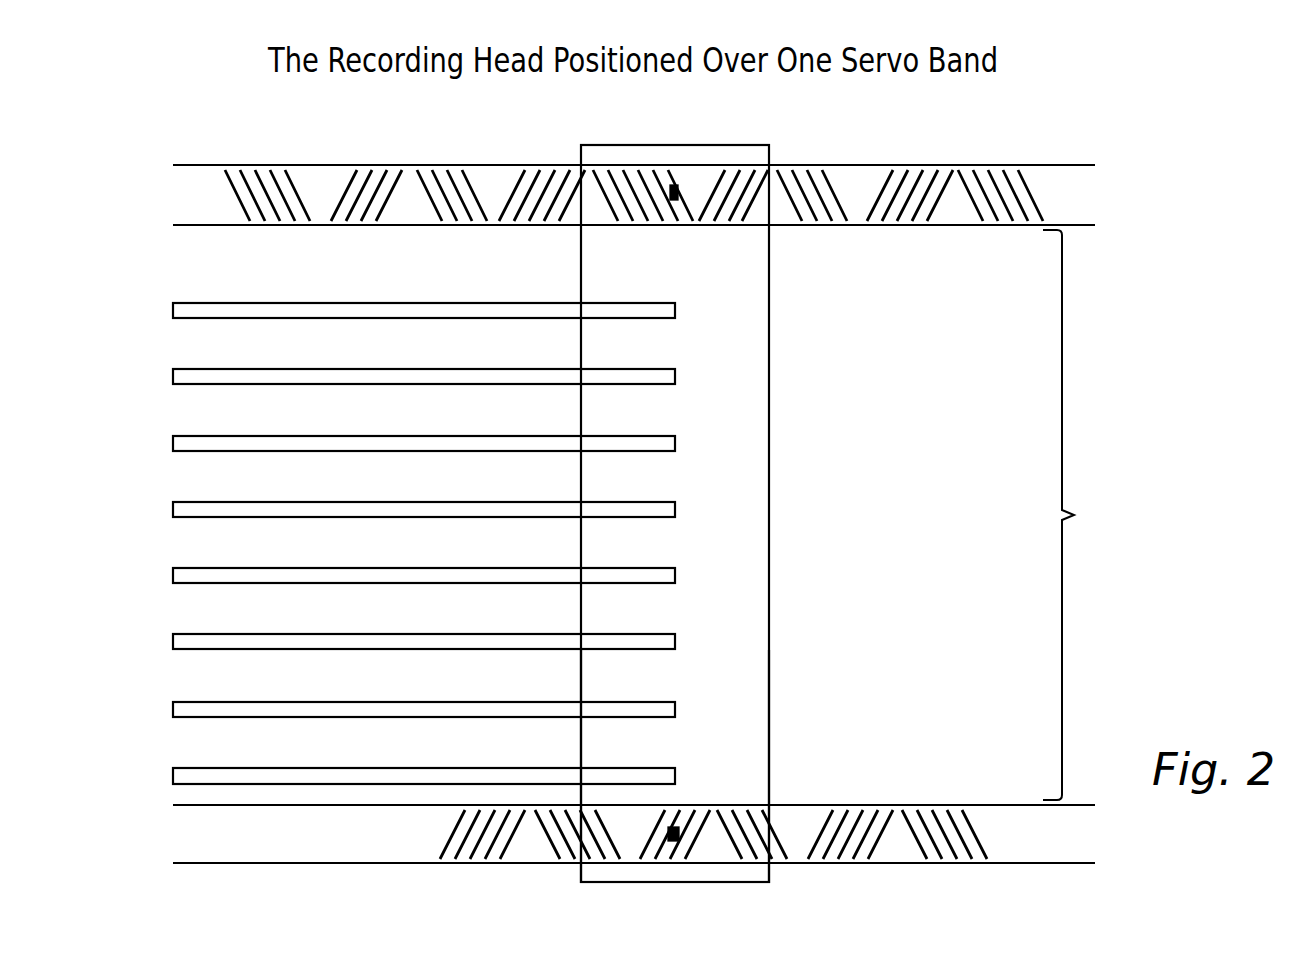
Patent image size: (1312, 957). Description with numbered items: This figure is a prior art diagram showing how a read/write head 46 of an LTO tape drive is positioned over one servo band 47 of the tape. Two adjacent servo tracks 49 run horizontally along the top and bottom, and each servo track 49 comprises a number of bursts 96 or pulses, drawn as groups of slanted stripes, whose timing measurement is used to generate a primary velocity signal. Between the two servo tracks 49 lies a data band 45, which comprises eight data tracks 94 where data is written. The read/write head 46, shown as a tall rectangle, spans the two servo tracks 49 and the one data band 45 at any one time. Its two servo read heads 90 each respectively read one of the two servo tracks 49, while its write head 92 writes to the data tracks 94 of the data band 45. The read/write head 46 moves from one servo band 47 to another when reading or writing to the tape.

The data band 45 is at (1078, 515).
The read/write head 46 is at (745, 145).
The servo band 47 is at (173, 165).
The servo track 49 is at (1068, 178).
The servo read head 90 is at (672, 185).
The write head 92 is at (742, 702).
The data track 94 is at (682, 303).
The burst 96 is at (985, 176).